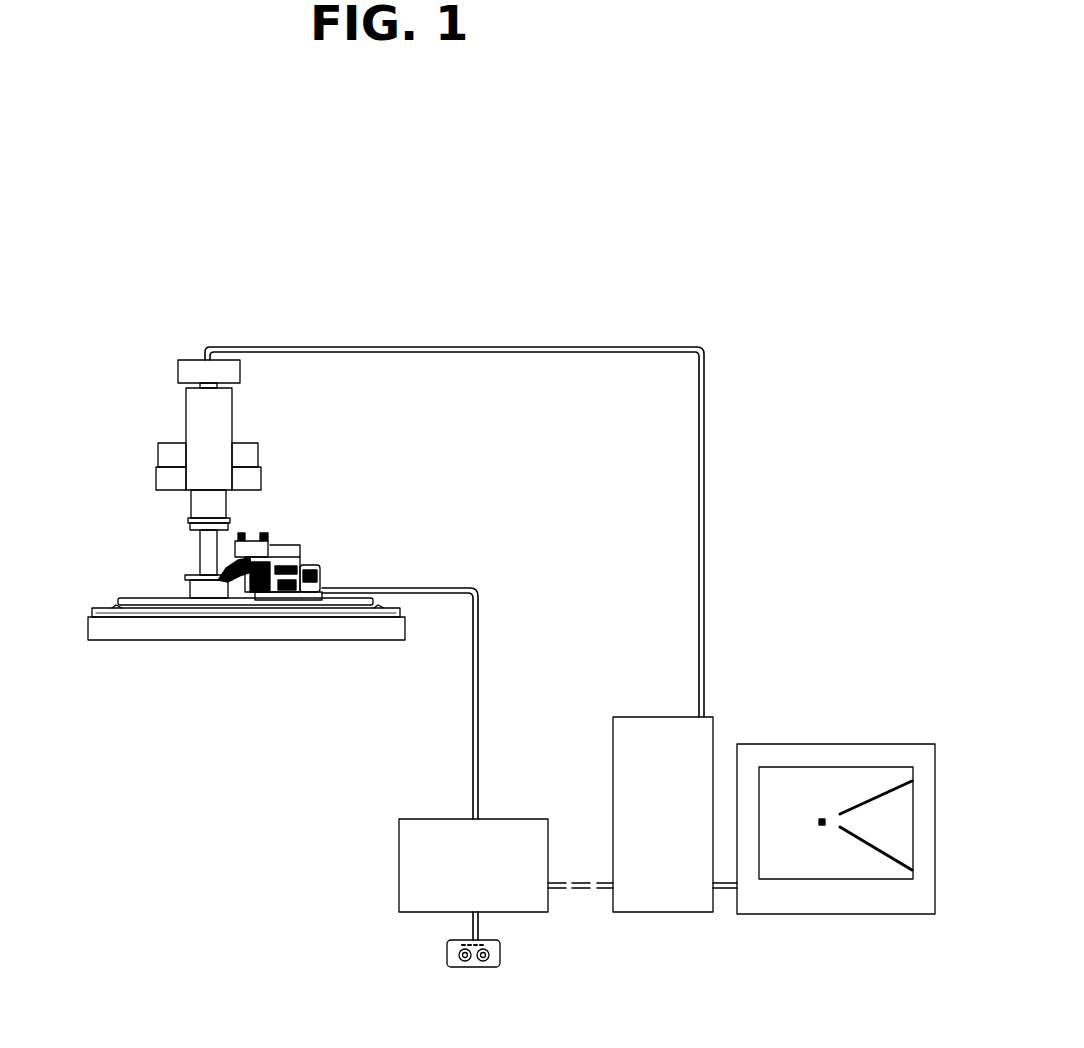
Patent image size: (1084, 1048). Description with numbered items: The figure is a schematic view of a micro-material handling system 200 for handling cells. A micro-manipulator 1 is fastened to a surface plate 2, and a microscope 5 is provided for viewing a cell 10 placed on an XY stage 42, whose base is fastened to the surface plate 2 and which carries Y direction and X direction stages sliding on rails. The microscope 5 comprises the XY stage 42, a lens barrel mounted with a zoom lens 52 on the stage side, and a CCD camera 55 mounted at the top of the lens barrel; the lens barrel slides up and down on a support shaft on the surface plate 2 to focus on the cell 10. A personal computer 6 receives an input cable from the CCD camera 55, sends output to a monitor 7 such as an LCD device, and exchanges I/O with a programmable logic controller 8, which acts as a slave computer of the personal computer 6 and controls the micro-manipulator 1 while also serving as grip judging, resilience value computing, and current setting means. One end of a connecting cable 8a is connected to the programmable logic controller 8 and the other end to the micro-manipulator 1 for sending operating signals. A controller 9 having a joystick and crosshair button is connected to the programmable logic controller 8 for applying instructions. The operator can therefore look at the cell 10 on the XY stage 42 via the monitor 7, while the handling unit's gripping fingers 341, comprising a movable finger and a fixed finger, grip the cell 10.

The micro-manipulator 1 is at (318, 518).
The surface plate 2 is at (155, 637).
The microscope 5 is at (267, 425).
The personal computer 6 is at (668, 912).
The monitor 7 is at (827, 914).
The programmable logic controller 8 is at (398, 844).
The connecting cable 8a is at (480, 665).
The controller 9 is at (502, 947).
The cell 10 is at (813, 810).
The XY stage 42 is at (208, 597).
The zoom lens 52 is at (190, 520).
The CCD camera 55 is at (178, 372).
The micro-material handling system 200 is at (443, 306).
The gripping fingers 341 is at (900, 863).